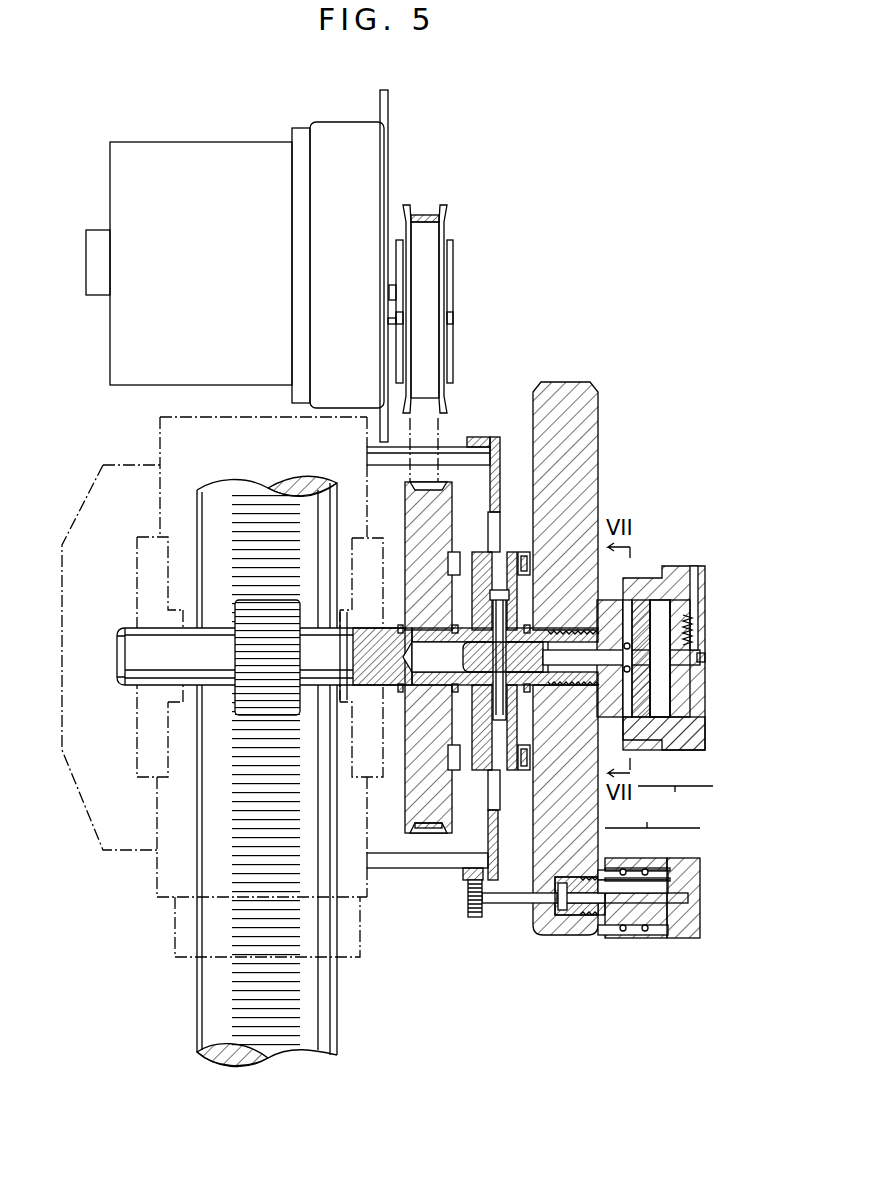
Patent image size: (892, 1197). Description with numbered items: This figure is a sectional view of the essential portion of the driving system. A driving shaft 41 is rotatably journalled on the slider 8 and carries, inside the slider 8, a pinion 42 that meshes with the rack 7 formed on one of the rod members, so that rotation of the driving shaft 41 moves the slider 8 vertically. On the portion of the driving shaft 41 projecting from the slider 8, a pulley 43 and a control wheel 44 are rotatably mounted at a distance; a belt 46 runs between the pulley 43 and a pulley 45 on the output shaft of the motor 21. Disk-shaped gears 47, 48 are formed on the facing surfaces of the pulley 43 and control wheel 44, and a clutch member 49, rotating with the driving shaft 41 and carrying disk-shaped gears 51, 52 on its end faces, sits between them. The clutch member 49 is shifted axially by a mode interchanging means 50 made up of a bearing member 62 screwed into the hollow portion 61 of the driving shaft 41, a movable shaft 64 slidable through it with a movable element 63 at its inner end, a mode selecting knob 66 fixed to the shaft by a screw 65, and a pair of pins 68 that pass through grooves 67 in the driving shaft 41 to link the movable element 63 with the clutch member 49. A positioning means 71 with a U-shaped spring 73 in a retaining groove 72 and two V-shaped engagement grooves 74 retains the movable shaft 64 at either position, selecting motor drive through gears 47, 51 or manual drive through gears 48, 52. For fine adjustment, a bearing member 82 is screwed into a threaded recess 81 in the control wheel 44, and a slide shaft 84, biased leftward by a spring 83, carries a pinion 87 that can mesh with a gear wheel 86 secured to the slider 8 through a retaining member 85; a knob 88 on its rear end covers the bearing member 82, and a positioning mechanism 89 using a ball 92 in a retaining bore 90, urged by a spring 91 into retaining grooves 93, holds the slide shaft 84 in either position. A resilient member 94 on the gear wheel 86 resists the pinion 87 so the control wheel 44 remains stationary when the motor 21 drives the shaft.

The motor 21 is at (212, 156).
The pulley 45 is at (432, 290).
The belt 46 is at (440, 426).
The slider 8 is at (158, 433).
The rack 7 is at (290, 1035).
The driving shaft 41 is at (122, 630).
The pinion 42 is at (242, 700).
The hollow portion 61 is at (348, 692).
The pulley 43 is at (406, 806).
The control wheel 44 is at (580, 470).
The clutch member 49 is at (478, 552).
The pins 68 is at (498, 592).
The disk-shaped gear 51 is at (456, 576).
The disk-shaped gear 52 is at (528, 582).
The grooves 67 is at (466, 703).
The disk-shaped gear 47 is at (454, 754).
The disk-shaped gear 48 is at (524, 770).
The movable element 63 is at (465, 655).
The movable shaft 64 is at (698, 660).
The mode interchanging means 50 is at (686, 660).
The bearing member 62 is at (640, 608).
The screw 65 is at (694, 641).
The mode selecting knob 66 is at (702, 710).
The retaining groove 72 is at (628, 720).
The U-shaped spring 73 is at (648, 664).
The engagement grooves 74 is at (686, 708).
The positioning means 71 is at (675, 799).
The gear wheel 86 is at (486, 828).
The retaining member 85 is at (397, 872).
The resilient member 94 is at (466, 880).
The slide shaft 84 is at (513, 908).
The pinion 87 is at (478, 920).
The threaded recess 81 is at (560, 918).
The spring 83 is at (571, 918).
The bearing member 82 is at (607, 922).
The knob 88 is at (687, 938).
The positioning mechanism 89 is at (652, 814).
The retaining grooves 93 is at (618, 868).
The spring 91 is at (625, 869).
The ball 92 is at (647, 869).
The retaining bore 90 is at (666, 872).